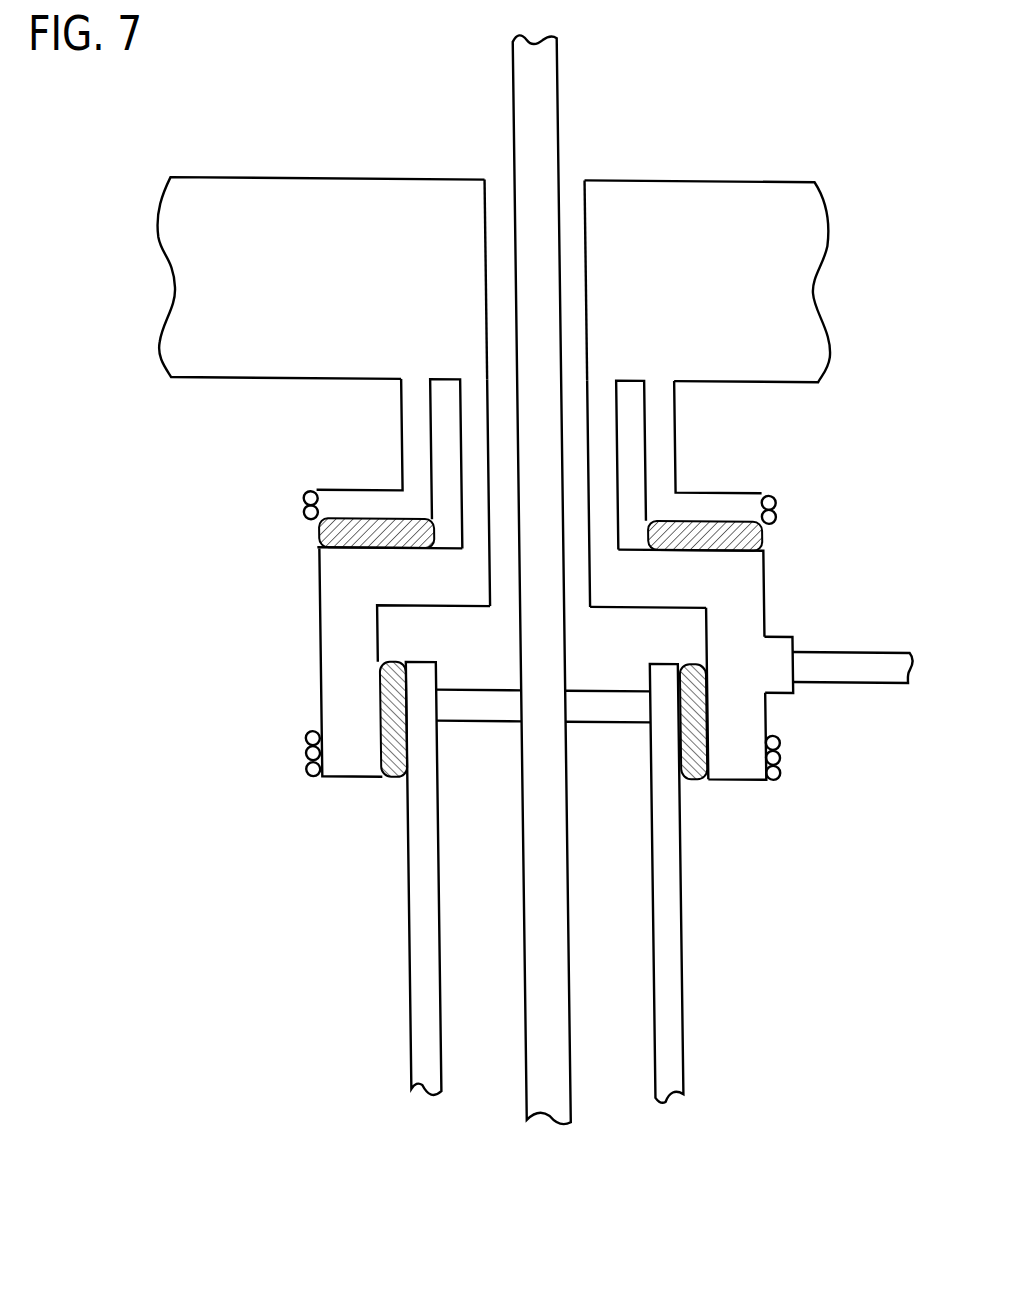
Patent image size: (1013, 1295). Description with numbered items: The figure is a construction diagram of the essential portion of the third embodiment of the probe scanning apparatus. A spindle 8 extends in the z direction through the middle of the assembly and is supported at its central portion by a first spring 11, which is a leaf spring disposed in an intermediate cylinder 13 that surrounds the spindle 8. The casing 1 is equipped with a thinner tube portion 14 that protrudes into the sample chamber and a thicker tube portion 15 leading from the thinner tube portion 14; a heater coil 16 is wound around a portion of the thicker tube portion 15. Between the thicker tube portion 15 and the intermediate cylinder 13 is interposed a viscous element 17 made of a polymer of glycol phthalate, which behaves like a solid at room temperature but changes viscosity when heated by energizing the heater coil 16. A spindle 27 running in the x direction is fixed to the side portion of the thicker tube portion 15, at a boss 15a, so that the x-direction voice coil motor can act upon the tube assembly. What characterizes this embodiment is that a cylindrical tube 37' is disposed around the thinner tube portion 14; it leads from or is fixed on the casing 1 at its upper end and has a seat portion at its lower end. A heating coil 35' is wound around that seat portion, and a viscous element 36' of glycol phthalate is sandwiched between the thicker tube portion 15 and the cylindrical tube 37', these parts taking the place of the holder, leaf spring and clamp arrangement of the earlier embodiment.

The casing 1 is at (771, 198).
The spindle 8 is at (547, 110).
The first spring 11 is at (602, 709).
The intermediate cylinder 13 is at (419, 959).
The thinner tube portion 14 is at (575, 462).
The thicker tube portion 15 is at (340, 591).
The boss 15a is at (777, 655).
The heater coil 16 is at (304, 755).
The viscous element 17 is at (392, 779).
The spindle 27 is at (849, 652).
The heating coil 35' is at (575, 498).
The viscous element 36' is at (588, 536).
The cylindrical tube 37' is at (593, 465).